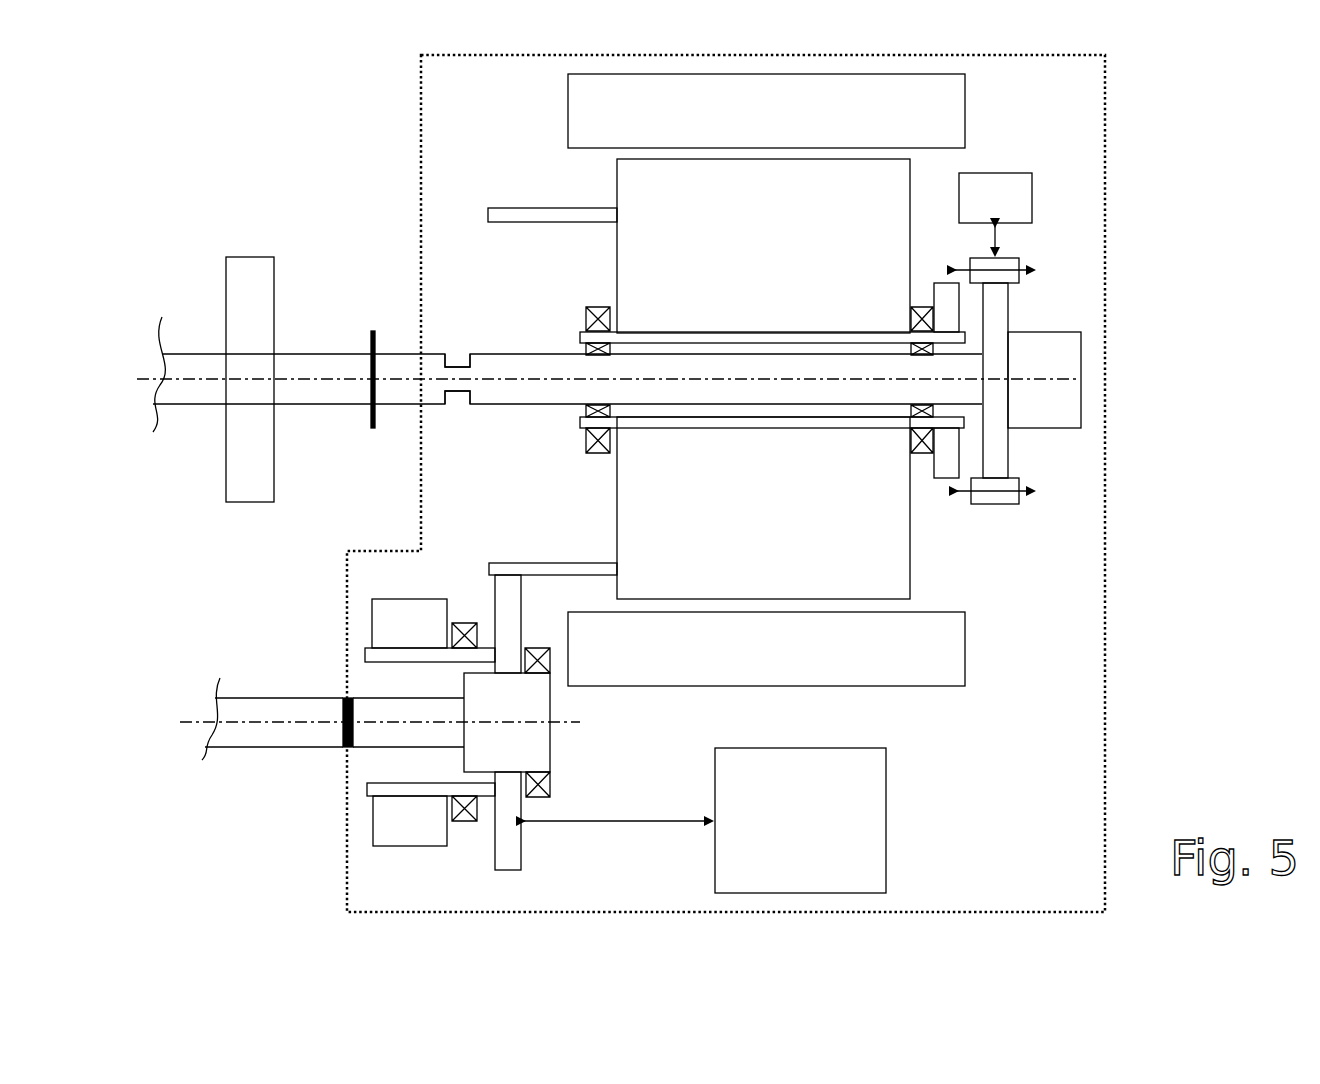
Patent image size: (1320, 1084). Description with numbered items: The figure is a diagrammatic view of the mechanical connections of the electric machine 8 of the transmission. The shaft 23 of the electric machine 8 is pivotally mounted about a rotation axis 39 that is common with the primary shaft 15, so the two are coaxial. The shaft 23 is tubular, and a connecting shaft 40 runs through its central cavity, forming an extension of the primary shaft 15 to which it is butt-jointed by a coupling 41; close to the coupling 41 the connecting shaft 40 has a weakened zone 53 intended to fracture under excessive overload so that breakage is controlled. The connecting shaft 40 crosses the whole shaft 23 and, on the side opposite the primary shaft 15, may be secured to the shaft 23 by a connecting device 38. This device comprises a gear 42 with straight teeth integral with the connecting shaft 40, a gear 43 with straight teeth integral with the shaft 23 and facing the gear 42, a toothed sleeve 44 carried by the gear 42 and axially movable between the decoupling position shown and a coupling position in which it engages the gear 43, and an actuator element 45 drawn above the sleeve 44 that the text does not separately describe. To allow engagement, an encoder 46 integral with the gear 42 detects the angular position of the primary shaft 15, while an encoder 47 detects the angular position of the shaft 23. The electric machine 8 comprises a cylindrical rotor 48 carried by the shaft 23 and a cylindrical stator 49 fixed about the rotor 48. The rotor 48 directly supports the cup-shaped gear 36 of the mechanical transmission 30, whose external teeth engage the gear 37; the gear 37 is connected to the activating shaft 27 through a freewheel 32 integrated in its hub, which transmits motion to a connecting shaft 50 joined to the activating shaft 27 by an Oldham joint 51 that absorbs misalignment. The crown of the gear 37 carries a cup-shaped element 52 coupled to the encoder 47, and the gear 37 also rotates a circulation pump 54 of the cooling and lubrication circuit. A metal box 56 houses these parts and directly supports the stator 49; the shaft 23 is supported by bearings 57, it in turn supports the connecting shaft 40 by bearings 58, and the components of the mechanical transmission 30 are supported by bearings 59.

The electric machine 8 is at (347, 129).
The primary shaft 15 is at (199, 365).
The shaft 23 is at (588, 337).
The activating shaft 27 is at (245, 735).
The mechanical transmission 30 is at (402, 512).
The freewheel 32 is at (507, 722).
The gear 36 is at (544, 217).
The gear 37 is at (513, 850).
The connecting device 38 is at (1051, 381).
The rotation axis 39 is at (190, 377).
The connecting shaft 40 is at (483, 397).
The coupling 41 is at (371, 347).
The gear 42 is at (995, 446).
The gear 43 is at (947, 467).
The toothed sleeve 44 is at (1002, 497).
The actuator drive 45 is at (995, 198).
The encoder 46 is at (1044, 380).
The encoder 47 is at (409, 722).
The rotor 48 is at (763, 379).
The stator 49 is at (766, 380).
The connecting shaft 50 is at (421, 730).
The Oldham joint 51 is at (340, 703).
The cup-shaped element 52 is at (488, 655).
The weakened zone 53 is at (461, 370).
The circulation pump 54 is at (705, 820).
The box 56 is at (1107, 578).
The bearings 57 is at (597, 305).
The bearings 58 is at (586, 410).
The bearings 59 is at (547, 783).